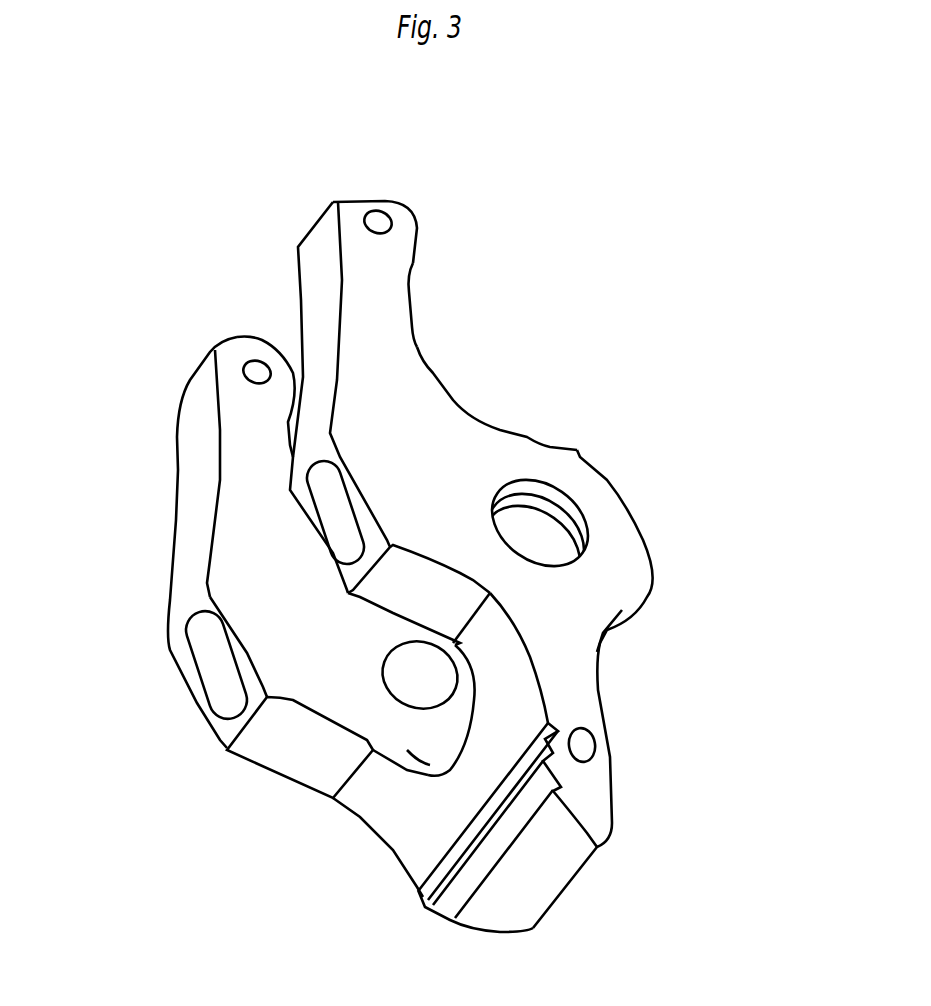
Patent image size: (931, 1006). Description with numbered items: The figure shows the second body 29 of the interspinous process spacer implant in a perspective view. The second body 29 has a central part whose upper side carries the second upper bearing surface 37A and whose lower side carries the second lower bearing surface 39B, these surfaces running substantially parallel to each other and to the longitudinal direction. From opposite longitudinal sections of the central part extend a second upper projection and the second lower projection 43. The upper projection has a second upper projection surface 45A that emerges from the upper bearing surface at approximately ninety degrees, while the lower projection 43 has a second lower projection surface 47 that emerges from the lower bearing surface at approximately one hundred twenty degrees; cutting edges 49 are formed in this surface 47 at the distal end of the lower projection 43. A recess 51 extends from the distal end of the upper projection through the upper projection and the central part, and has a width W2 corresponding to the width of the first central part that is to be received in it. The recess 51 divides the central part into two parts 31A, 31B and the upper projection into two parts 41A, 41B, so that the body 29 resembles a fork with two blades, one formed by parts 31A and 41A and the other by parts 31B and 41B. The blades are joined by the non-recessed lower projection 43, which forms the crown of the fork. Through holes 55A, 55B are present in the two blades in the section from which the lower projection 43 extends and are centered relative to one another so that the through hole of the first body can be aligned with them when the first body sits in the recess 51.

The second body 29 is at (409, 592).
The second upper projection part 41A is at (319, 397).
The second upper projection part 41B is at (181, 542).
The second upper projection surface 45A is at (460, 277).
The second central part 31A is at (497, 378).
The second central part 31B is at (297, 663).
The second upper bearing surface 37A is at (588, 503).
The second lower bearing surface 39B is at (270, 777).
The second lower projection 43 is at (612, 760).
The second lower projection surface 47 is at (400, 865).
The cutting edges 49 is at (450, 918).
The recess 51 is at (262, 634).
The through hole 55A is at (582, 519).
The through hole 55B is at (555, 683).
The width of the recess W2 is at (227, 613).